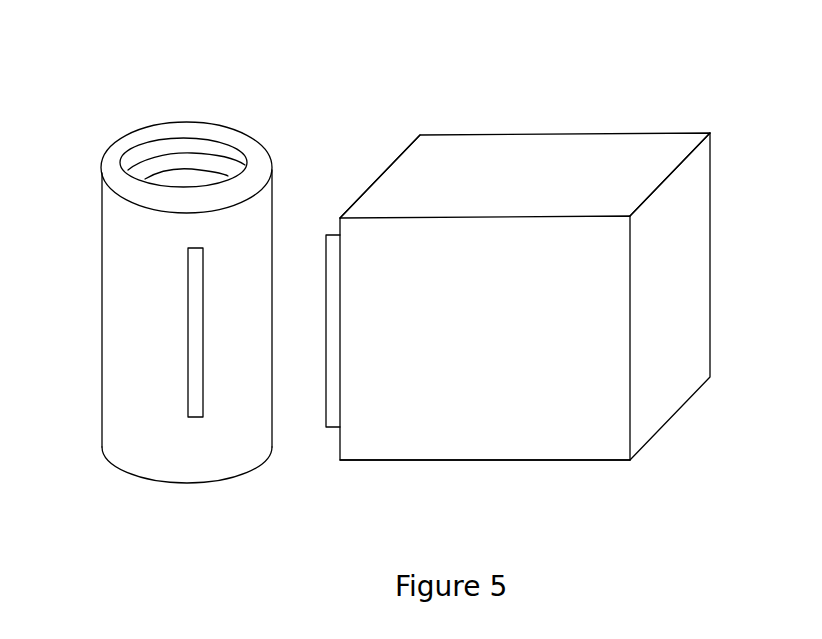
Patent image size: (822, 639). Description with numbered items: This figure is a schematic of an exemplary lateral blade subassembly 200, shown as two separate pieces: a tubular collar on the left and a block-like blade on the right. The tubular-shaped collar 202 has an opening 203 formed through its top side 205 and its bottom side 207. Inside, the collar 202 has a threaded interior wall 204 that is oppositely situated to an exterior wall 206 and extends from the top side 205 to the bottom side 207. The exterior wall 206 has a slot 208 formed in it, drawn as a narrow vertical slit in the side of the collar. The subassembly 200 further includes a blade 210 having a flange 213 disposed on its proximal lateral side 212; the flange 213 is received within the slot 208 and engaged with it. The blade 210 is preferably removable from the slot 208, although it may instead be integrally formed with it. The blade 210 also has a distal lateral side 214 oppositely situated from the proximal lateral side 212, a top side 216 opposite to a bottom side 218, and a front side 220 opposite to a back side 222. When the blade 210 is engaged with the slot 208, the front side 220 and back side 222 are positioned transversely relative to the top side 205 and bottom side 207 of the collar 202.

The lateral blade subassembly 200 is at (373, 68).
The collar 202 is at (75, 137).
The opening 203 is at (184, 150).
The threaded interior wall 204 is at (130, 157).
The top side 205 is at (242, 143).
The exterior wall 206 is at (135, 443).
The bottom side 207 is at (208, 483).
The slot 208 is at (197, 408).
The blade 210 is at (527, 122).
The proximal lateral side 212 is at (338, 228).
The flange 213 is at (337, 414).
The distal lateral side 214 is at (697, 253).
The top side 216 is at (597, 153).
The bottom side 218 is at (468, 462).
The front side 220 is at (594, 432).
The back side 222 is at (692, 130).